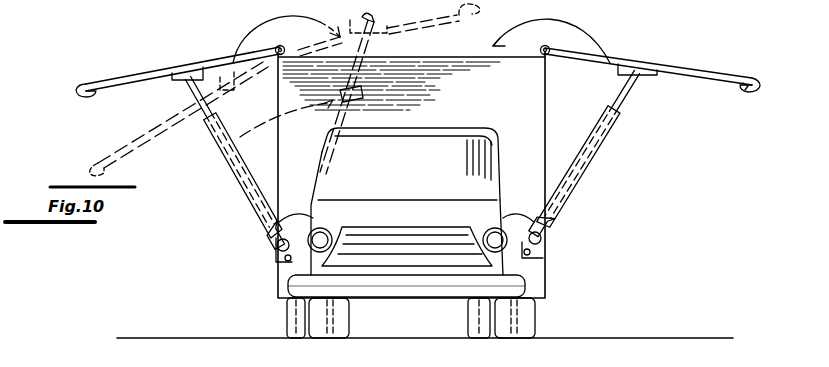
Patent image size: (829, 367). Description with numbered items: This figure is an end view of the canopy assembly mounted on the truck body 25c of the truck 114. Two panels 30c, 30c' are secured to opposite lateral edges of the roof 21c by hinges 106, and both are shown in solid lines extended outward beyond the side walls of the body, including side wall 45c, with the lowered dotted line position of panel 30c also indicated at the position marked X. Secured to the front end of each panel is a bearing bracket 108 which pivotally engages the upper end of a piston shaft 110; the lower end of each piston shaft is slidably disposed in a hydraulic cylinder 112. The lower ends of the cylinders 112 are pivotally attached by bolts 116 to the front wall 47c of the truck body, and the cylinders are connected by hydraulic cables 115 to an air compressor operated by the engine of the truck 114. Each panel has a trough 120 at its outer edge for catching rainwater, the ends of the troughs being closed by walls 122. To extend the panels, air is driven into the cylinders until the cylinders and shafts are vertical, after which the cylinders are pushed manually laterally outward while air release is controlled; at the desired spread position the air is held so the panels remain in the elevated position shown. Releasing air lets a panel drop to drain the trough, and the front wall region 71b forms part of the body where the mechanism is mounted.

The panel 30c is at (178, 64).
The panel 30c' is at (669, 84).
The roof 21c is at (455, 57).
The hinges 106 is at (545, 28).
The bearing bracket 108 is at (640, 77).
The piston shaft 110 is at (626, 102).
The hydraulic cylinder 112 is at (595, 154).
The truck 114 is at (445, 260).
The hydraulic cables 115 is at (513, 220).
The bolts 116 is at (547, 257).
The trough 120 is at (733, 82).
The walls 122 is at (737, 95).
The side wall 45c is at (276, 258).
The truck body 25c is at (270, 287).
The front wall 47c is at (544, 290).
The body front wall 71b is at (549, 130).
The arm position X is at (75, 164).